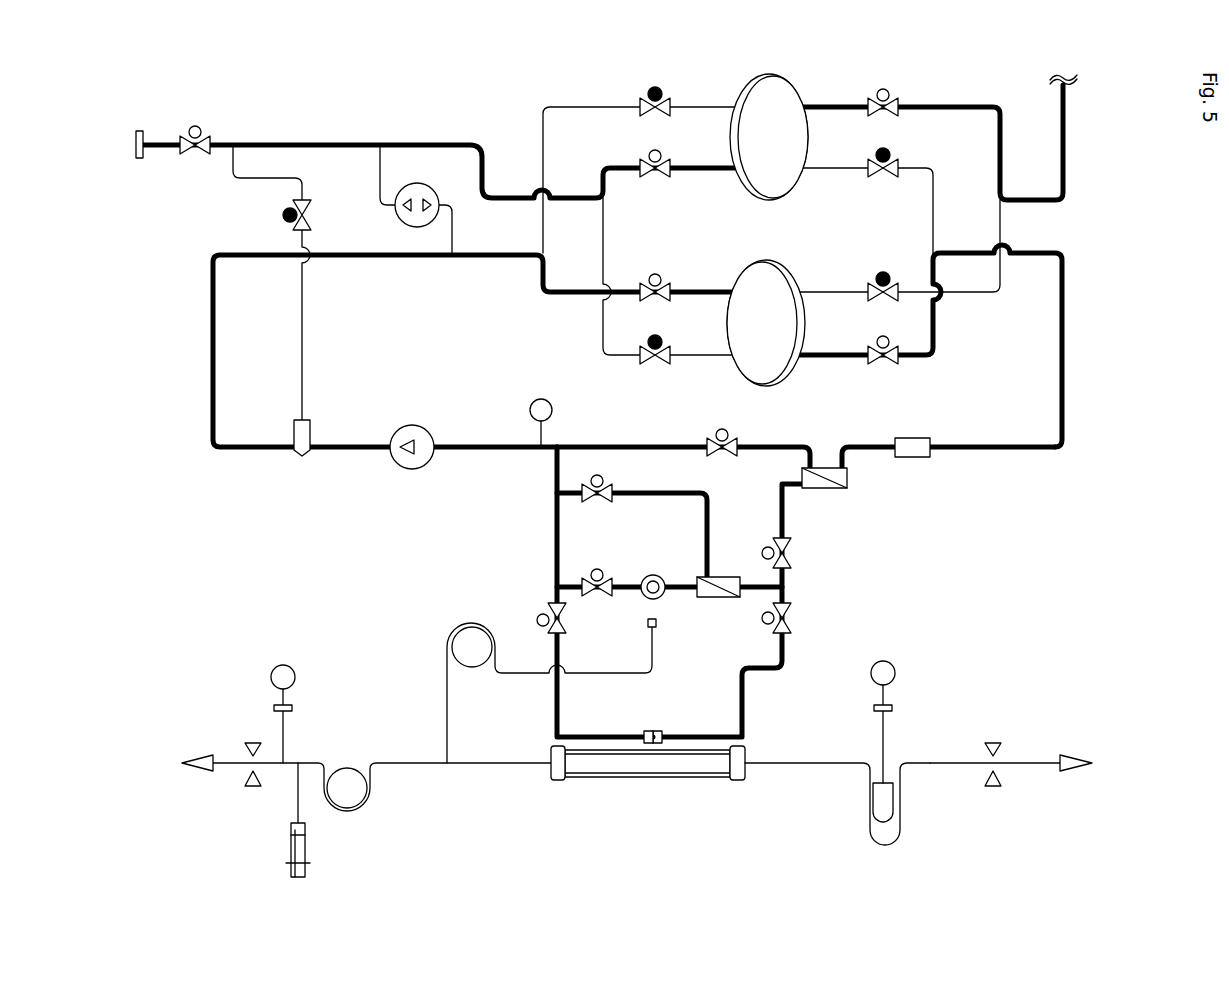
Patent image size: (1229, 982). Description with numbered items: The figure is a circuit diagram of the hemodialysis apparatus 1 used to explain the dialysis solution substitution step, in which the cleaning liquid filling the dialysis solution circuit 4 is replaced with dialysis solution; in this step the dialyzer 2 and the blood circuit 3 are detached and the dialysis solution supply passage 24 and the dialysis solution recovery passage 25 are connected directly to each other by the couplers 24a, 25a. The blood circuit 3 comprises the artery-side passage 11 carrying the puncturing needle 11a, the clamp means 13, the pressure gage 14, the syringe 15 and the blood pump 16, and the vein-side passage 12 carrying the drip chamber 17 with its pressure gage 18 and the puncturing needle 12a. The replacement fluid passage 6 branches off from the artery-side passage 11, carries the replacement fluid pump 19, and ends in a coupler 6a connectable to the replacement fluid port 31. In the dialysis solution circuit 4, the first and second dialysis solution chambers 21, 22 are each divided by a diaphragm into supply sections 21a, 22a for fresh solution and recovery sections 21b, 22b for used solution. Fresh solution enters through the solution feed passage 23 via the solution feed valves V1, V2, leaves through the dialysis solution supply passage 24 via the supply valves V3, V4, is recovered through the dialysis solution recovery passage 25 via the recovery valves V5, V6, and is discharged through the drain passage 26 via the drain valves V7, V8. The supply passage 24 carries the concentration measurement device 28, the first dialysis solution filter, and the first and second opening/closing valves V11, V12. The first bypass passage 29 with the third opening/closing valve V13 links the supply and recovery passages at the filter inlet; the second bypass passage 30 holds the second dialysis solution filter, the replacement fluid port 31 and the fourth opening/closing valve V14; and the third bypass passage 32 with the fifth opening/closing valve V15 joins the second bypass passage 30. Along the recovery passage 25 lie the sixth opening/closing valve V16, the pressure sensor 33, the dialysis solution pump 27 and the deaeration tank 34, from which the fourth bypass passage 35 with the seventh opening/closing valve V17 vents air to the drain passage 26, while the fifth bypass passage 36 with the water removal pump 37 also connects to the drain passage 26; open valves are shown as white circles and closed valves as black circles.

The hemodialysis apparatus 1 is at (1003, 552).
The dialyzer 2 is at (665, 780).
The blood circuit 3 is at (778, 769).
The dialysis solution circuit 4 is at (1066, 384).
The replacement fluid passage 6 is at (445, 675).
The coupler 6a is at (648, 626).
The artery-side passage 11 is at (425, 767).
The puncturing needle 11a is at (188, 790).
The vein-side passage 12 is at (947, 767).
The puncturing needle 12a is at (1068, 770).
The clamp means 13 is at (253, 790).
The pressure gage 14 is at (296, 683).
The syringe 15 is at (307, 858).
The blood pump 16 is at (353, 765).
The drip chamber 17 is at (870, 800).
The pressure gage 18 is at (897, 676).
The replacement fluid pump 19 is at (470, 640).
The first dialysis solution chamber 21 is at (785, 117).
The supply section 21a is at (796, 93).
The recovery section 21b is at (741, 95).
The second dialysis solution chamber 22 is at (792, 302).
The supply section 22a is at (796, 281).
The recovery section 22b is at (753, 278).
The solution feed passage 23 is at (1066, 140).
The dialysis solution supply passage 24 is at (977, 452).
The coupler 24a is at (660, 730).
The dialysis solution recovery passage 25 is at (481, 450).
The coupler 25a is at (648, 730).
The drain passage 26 is at (337, 143).
The dialysis solution pump 27 is at (412, 425).
The concentration measurement device 28 is at (926, 438).
The first bypass passage 29 is at (660, 445).
The second bypass passage 30 is at (681, 598).
The replacement fluid port 31 is at (661, 578).
The third bypass passage 32 is at (677, 495).
The pressure sensor 33 is at (541, 399).
The deaeration tank 34 is at (302, 459).
The fourth bypass passage 35 is at (303, 362).
The fifth bypass passage 36 is at (385, 165).
The water removal pump 37 is at (400, 223).
The solution feed valve V1 is at (888, 94).
The solution feed valve V2 is at (889, 277).
The supply valve V3 is at (890, 156).
The supply valve V4 is at (889, 340).
The recovery valve V5 is at (658, 92).
The recovery valve V6 is at (666, 278).
The drain valve V7 is at (662, 156).
The drain valve V8 is at (666, 340).
The first opening/closing valve V11 is at (762, 553).
The second opening/closing valve V12 is at (763, 624).
The third opening/closing valve V13 is at (729, 436).
The fourth opening/closing valve V14 is at (604, 580).
The fifth opening/closing valve V15 is at (604, 488).
The sixth opening/closing valve V16 is at (537, 618).
The seventh opening/closing valve V17 is at (282, 217).